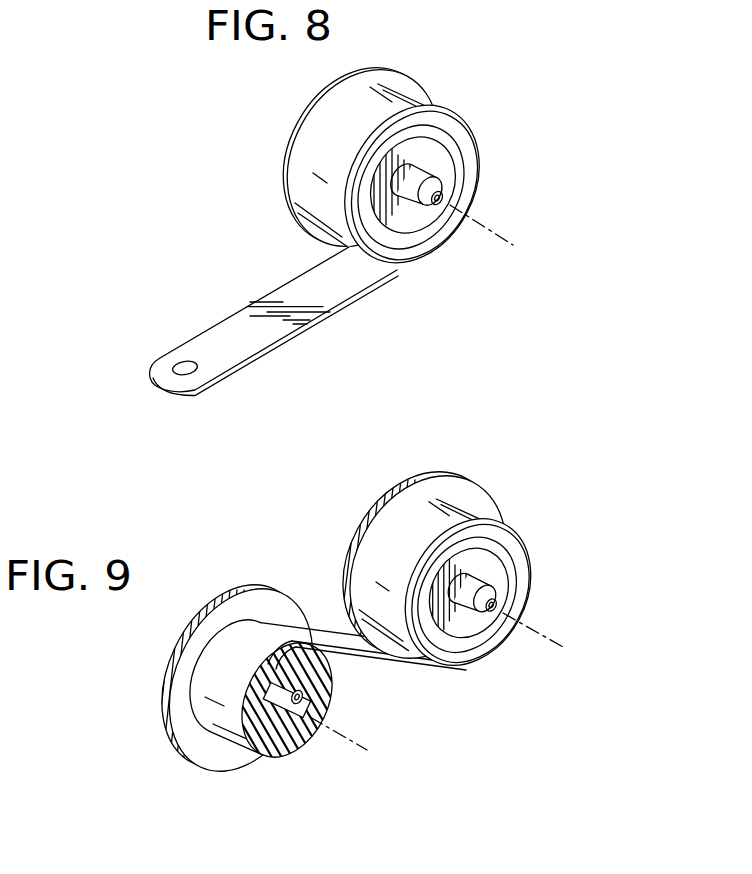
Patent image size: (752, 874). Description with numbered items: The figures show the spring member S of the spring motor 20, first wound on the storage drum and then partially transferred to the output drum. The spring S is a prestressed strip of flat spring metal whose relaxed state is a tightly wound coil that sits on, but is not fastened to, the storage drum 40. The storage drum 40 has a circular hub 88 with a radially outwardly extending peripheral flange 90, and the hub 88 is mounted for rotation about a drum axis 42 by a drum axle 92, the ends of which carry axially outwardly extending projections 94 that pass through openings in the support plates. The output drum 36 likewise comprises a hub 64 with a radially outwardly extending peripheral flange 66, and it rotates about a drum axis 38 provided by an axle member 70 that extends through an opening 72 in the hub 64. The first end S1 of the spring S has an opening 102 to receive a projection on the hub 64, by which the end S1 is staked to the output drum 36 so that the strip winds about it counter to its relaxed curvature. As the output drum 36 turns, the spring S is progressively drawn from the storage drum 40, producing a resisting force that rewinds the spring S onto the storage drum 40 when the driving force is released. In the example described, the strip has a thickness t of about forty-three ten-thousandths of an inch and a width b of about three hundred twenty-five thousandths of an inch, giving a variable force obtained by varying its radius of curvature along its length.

In FIG. 9, the spring motor 20 is at (385, 626).
In FIG. 9, the output drum 36 is at (270, 703).
In FIG. 9, the drum axis 38 is at (367, 750).
In FIG. 8, the storage drum 40 is at (395, 161).
In FIG. 9, the storage drum 40 is at (480, 547).
In FIG. 8, the drum axis 42 is at (513, 245).
In FIG. 9, the drum axis 42 is at (563, 647).
In FIG. 9, the hub 64 is at (283, 742).
In FIG. 9, the peripheral flange 66 is at (190, 745).
In FIG. 9, the axle member 70 is at (302, 727).
In FIG. 9, the opening 72 is at (304, 697).
In FIG. 8, the circular hub 88 is at (437, 153).
In FIG. 9, the circular hub 88 is at (487, 550).
In FIG. 8, the peripheral flange 90 is at (303, 116).
In FIG. 9, the peripheral flange 90 is at (402, 480).
In FIG. 8, the drum axle 92 is at (425, 173).
In FIG. 9, the drum axle 92 is at (477, 573).
In FIG. 8, the projections 94 is at (447, 237).
In FIG. 9, the projections 94 is at (497, 597).
In FIG. 8, the opening 102 is at (178, 362).
In FIG. 8, the spring member S is at (273, 347).
In FIG. 9, the spring member S is at (335, 636).
In FIG. 8, the first end of spring S1 is at (187, 393).
In FIG. 9, the first end of spring S1 is at (280, 657).
In FIG. 8, the width b is at (283, 282).
In FIG. 8, the thickness t is at (247, 322).